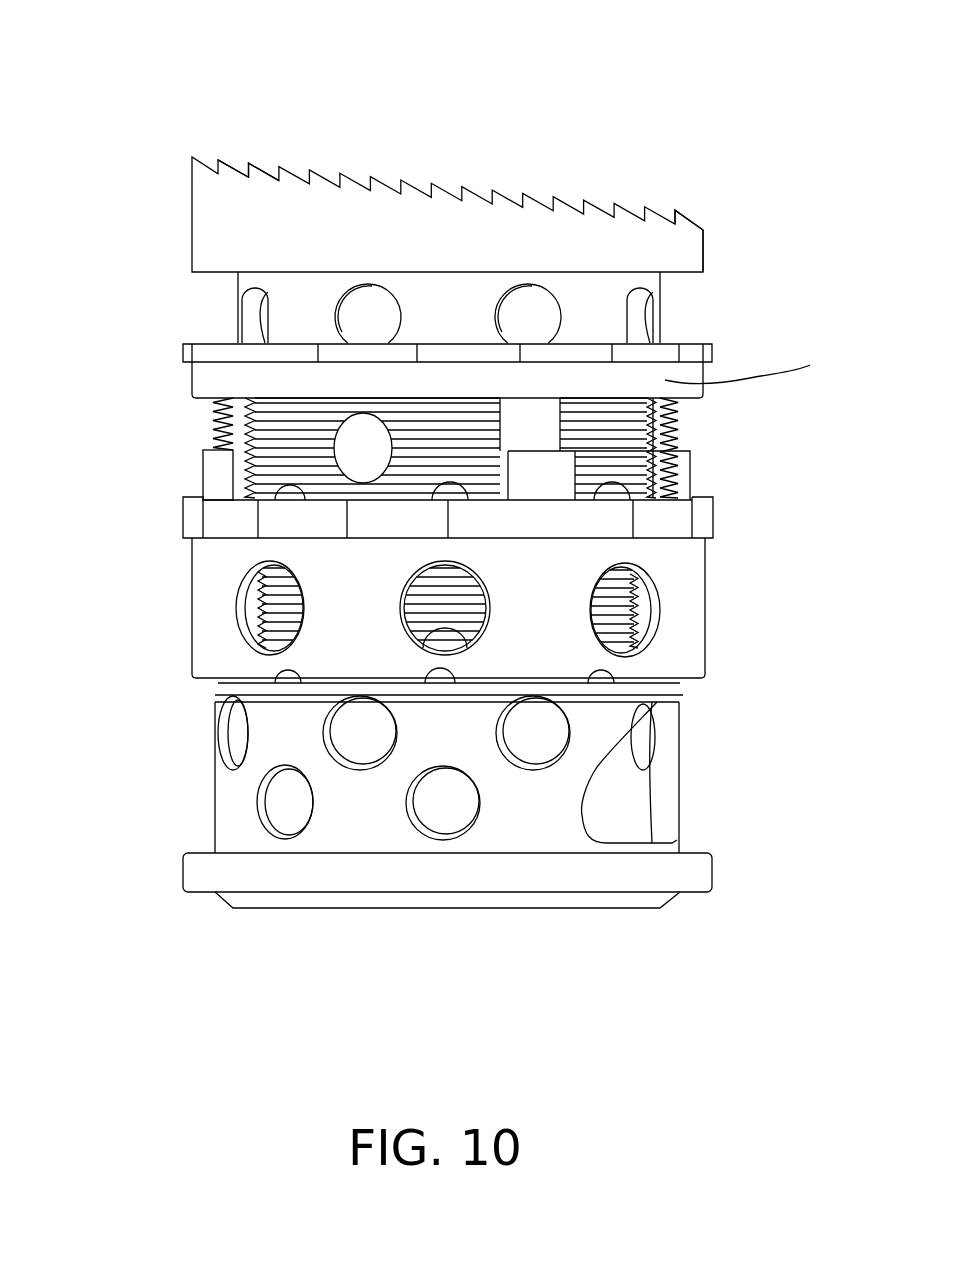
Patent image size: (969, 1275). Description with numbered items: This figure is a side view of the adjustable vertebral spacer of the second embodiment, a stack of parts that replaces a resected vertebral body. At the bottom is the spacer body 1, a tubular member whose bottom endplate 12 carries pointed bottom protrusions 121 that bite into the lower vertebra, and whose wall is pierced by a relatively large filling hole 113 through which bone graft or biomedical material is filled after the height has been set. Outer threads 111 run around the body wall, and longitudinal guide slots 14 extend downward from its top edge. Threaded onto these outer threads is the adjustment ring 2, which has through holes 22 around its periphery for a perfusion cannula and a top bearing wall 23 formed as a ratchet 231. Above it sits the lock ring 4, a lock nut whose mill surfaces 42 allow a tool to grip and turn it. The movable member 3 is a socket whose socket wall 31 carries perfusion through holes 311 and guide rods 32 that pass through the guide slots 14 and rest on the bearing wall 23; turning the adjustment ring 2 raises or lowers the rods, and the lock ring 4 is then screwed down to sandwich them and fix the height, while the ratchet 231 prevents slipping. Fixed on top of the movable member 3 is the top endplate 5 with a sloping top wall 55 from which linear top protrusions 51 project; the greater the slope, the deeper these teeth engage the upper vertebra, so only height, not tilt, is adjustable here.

The spacer body 1 is at (680, 738).
The bottom endplate 12 is at (517, 877).
The bottom protrusions 121 is at (387, 897).
The filling hole 113 is at (270, 800).
The outer threads 111 is at (660, 410).
The longitudinal guide slots 14 is at (540, 423).
The adjustment ring 2 is at (223, 581).
The through holes 22 is at (647, 610).
The bearing wall 23 is at (183, 510).
The ratchet 231 is at (233, 497).
The movable member 3 is at (233, 307).
The socket wall 31 is at (297, 297).
The through holes 311 is at (535, 317).
The guide rods 32 is at (550, 475).
The lock ring 4 is at (685, 343).
The mill surfaces 42 is at (227, 352).
The top endplate 5 is at (253, 222).
The top protrusions 51 is at (376, 178).
The sloping top wall 55 is at (687, 212).